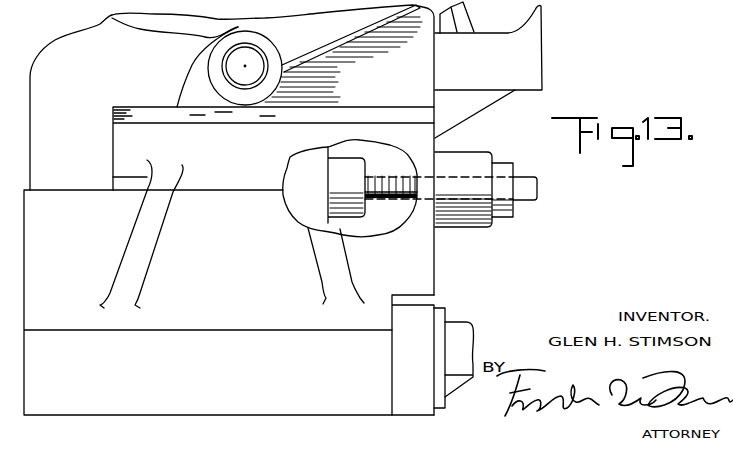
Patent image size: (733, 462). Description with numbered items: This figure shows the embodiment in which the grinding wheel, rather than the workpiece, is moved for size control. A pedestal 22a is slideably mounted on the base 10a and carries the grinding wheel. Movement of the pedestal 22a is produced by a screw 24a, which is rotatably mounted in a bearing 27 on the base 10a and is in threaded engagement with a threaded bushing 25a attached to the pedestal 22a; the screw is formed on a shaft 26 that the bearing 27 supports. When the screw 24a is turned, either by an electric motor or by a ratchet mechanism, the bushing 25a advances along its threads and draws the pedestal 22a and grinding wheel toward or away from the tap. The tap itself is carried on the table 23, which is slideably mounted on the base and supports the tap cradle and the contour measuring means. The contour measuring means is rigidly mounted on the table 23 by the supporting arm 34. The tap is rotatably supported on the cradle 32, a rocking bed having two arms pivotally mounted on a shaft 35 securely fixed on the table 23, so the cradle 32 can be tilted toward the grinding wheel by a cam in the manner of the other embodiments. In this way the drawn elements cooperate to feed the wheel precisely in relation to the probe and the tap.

The base 10a is at (225, 402).
The pedestal 22a is at (110, 34).
The table 23 is at (118, 147).
The screw 24a is at (392, 198).
The threaded bushing 25a is at (343, 170).
The shaft 26 is at (525, 180).
The bearing 27 is at (473, 226).
The cradle 32 is at (332, 35).
The supporting arm 34 is at (528, 83).
The shaft 35 is at (233, 63).